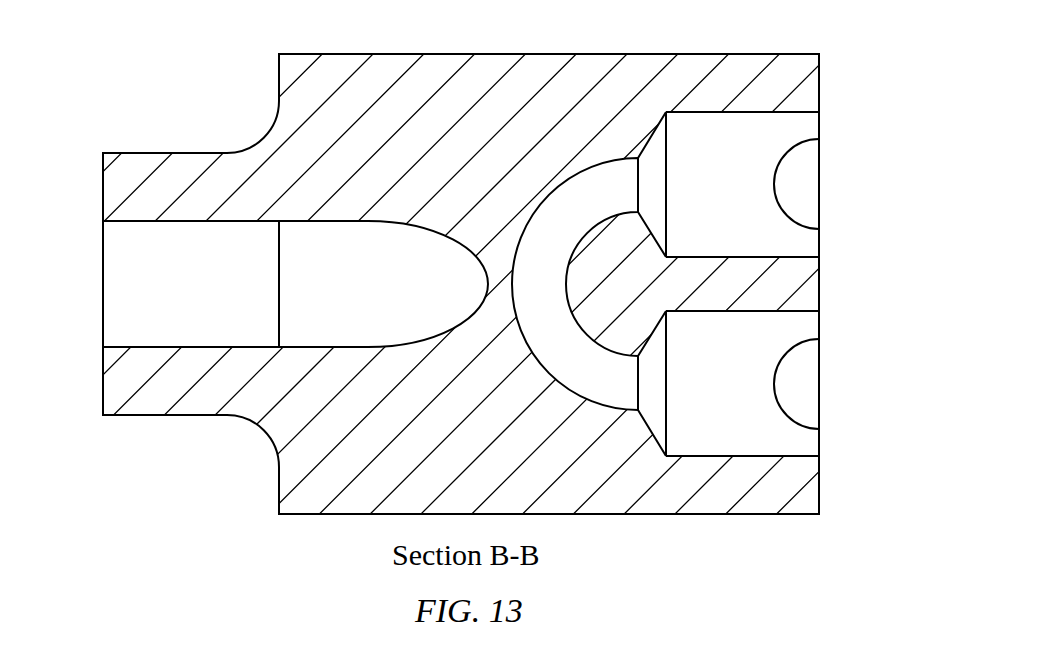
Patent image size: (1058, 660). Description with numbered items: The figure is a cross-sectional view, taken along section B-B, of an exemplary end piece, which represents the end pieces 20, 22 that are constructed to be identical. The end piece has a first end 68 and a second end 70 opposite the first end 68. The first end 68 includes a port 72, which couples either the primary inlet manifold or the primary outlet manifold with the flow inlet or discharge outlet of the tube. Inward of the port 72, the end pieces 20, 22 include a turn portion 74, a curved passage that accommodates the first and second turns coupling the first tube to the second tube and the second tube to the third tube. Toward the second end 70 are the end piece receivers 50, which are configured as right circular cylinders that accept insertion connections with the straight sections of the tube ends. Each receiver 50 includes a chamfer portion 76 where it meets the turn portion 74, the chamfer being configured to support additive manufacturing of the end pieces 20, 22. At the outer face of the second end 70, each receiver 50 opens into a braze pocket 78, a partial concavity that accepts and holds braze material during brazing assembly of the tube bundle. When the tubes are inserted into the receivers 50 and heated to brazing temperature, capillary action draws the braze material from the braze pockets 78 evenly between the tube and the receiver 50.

The first end 68 is at (93, 126).
The second end 70 is at (840, 487).
The port 72 is at (202, 304).
The turn portion 74 is at (552, 295).
The end piece receivers 50 is at (840, 138).
The chamfer portion 76 is at (647, 137).
The braze pockets 78 is at (802, 185).
The end piece 20 is at (100, 523).
The end piece 22 is at (100, 523).